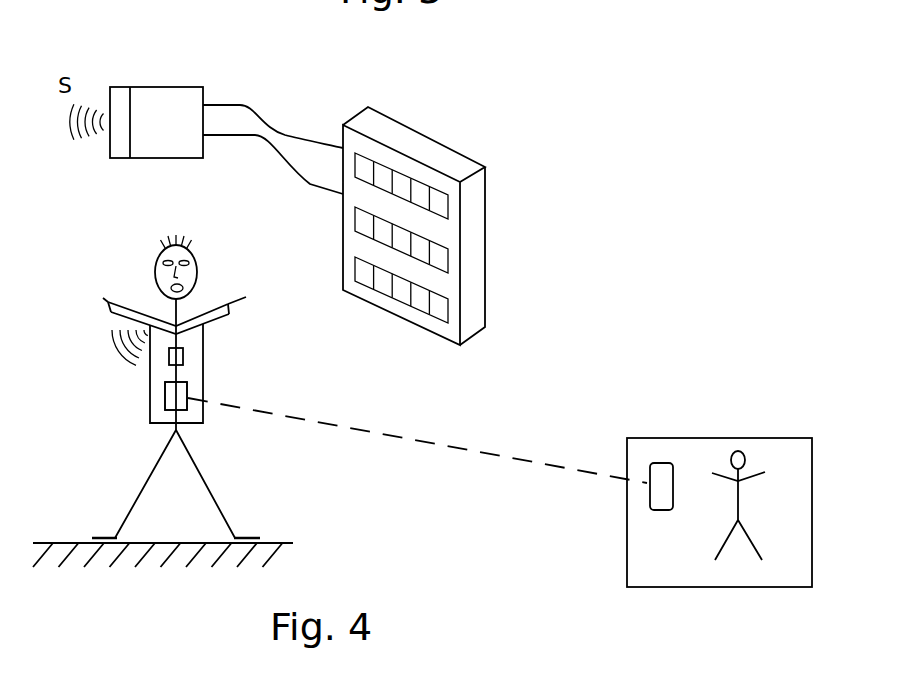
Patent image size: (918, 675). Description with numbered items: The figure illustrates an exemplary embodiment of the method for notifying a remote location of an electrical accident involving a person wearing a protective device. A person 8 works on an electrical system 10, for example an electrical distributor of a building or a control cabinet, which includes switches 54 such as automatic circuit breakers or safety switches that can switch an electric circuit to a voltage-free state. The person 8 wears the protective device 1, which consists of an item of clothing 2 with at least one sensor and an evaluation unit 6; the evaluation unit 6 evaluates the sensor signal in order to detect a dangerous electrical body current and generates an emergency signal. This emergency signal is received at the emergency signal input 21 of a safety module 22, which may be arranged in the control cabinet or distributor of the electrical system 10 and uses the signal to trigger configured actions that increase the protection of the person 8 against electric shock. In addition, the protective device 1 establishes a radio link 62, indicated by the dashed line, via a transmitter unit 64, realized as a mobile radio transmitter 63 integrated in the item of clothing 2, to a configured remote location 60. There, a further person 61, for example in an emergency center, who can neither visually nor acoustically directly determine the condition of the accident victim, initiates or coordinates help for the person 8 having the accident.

The protective device 1 is at (120, 297).
The item of clothing 2 is at (133, 325).
The evaluation unit 6 is at (185, 357).
The person 8 is at (127, 515).
The electrical system 10 is at (484, 148).
The emergency signal input 21 is at (122, 112).
The safety module 22 is at (170, 85).
The switch 54 is at (383, 178).
The remote location 60 is at (792, 437).
The further person 61 is at (725, 538).
The radio link 62 is at (447, 448).
The mobile radio transmitter 63 is at (187, 385).
The transmitter unit 64 is at (167, 397).